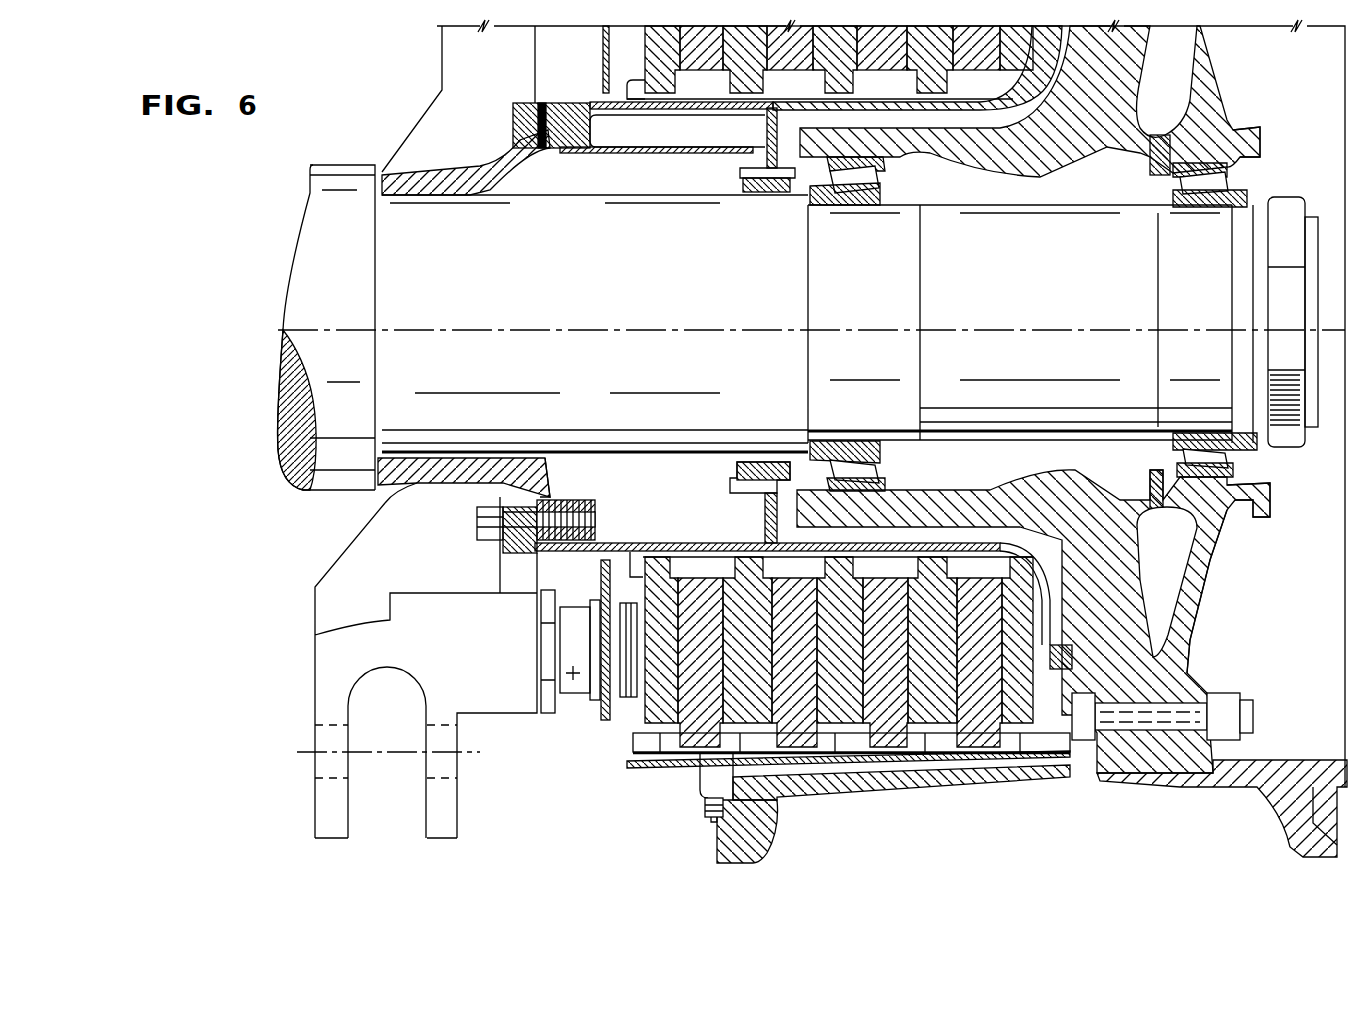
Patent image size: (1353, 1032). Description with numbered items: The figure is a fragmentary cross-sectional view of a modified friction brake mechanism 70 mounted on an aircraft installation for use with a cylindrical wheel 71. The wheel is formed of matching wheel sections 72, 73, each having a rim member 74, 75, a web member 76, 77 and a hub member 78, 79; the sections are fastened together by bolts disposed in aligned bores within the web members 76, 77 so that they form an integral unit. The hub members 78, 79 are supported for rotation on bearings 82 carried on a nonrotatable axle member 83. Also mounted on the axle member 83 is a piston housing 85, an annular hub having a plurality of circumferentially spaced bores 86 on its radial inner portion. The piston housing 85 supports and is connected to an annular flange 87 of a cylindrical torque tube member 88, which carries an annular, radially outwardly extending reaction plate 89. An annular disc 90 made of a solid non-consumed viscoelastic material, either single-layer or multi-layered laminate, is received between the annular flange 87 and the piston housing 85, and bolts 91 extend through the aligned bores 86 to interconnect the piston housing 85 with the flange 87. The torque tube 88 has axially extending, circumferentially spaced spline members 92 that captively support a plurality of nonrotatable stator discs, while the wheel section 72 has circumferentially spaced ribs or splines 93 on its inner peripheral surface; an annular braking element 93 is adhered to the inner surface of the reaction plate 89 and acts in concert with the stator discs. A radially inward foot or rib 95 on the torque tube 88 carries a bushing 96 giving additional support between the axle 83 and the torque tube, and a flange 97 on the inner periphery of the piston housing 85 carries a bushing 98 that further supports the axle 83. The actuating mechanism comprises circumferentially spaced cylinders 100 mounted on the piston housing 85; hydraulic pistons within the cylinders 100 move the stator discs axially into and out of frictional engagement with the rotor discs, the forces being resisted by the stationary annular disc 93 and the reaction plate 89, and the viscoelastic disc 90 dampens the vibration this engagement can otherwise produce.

The friction brake mechanism 70 is at (621, 748).
The cylindrical wheel 71 is at (989, 800).
The wheel section 72 is at (858, 793).
The wheel section 73 is at (1190, 787).
The rim member 74 is at (762, 860).
The rim member 75 is at (1293, 850).
The web member 76 is at (1137, 570).
The web member 77 is at (1185, 628).
The hub member 78 is at (1064, 487).
The hub member 79 is at (1240, 482).
The bearings 82 is at (885, 185).
The axle member 83 is at (1013, 296).
The piston housing 85 is at (400, 628).
The bores 86 is at (522, 500).
The annular flange 87 is at (574, 500).
The torque tube member 88 is at (668, 543).
The reaction plate 89 is at (1057, 613).
The annular disc 90 is at (516, 132).
The bolts 91 is at (476, 540).
The spline members 92 is at (700, 560).
The ribs or splines / annular braking element 93 is at (905, 768).
The foot or rib 95 is at (762, 500).
The bushing 96 is at (762, 458).
The flange 97 is at (385, 500).
The bushing 98 is at (442, 197).
The cylinders 100 is at (573, 680).